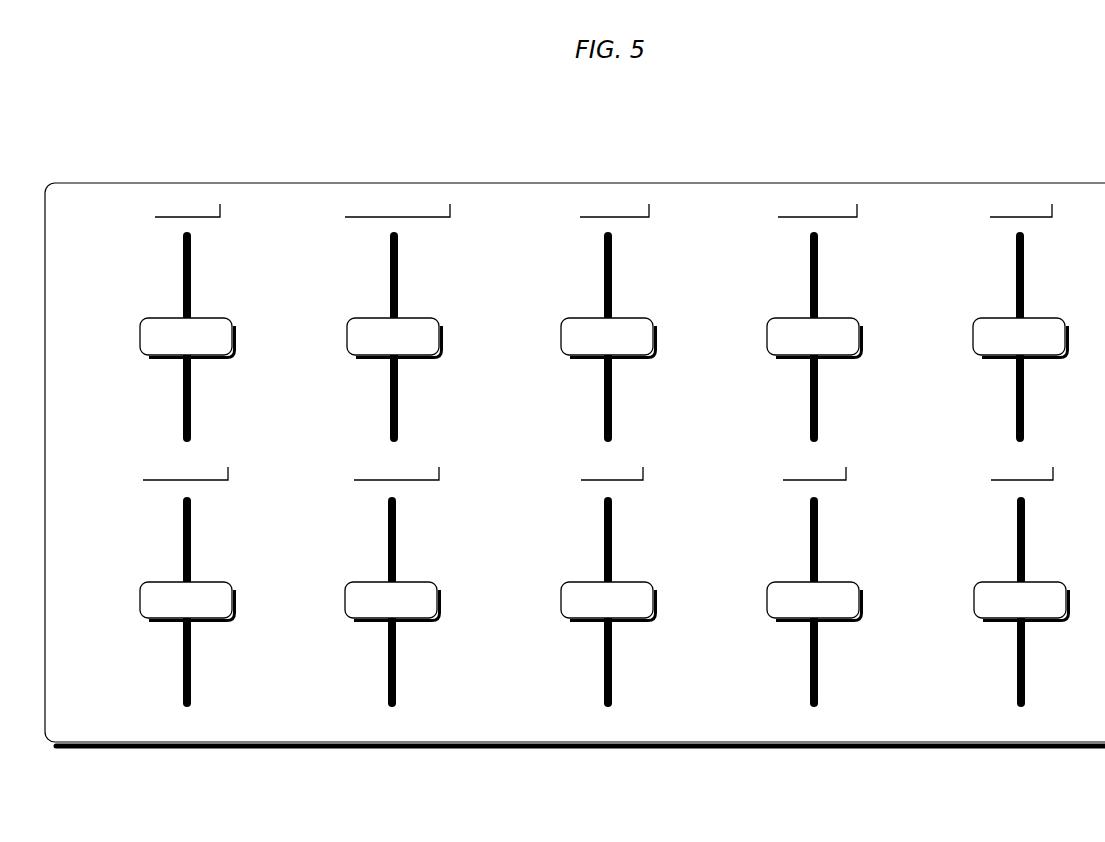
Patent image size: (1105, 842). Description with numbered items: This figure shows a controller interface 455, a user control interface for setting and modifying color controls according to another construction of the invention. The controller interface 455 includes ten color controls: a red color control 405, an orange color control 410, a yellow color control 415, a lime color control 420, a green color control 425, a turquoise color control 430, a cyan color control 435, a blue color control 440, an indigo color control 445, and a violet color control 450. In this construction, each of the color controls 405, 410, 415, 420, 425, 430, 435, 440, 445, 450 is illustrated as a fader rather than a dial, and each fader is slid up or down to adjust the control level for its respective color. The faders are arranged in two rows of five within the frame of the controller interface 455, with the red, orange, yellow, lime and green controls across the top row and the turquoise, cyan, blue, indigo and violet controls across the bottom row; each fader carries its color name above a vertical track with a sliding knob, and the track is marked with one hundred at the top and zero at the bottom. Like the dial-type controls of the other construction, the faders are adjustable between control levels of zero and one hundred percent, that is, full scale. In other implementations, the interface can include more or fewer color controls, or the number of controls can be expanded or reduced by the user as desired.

The red color control 405 is at (155, 207).
The orange color control 410 is at (345, 207).
The yellow color control 415 is at (580, 207).
The lime color control 420 is at (778, 207).
The green color control 425 is at (990, 207).
The turquoise color control 430 is at (143, 470).
The cyan color control 435 is at (354, 472).
The blue color control 440 is at (581, 472).
The indigo color control 445 is at (783, 472).
The violet color control 450 is at (991, 472).
The controller interface 455 is at (904, 110).